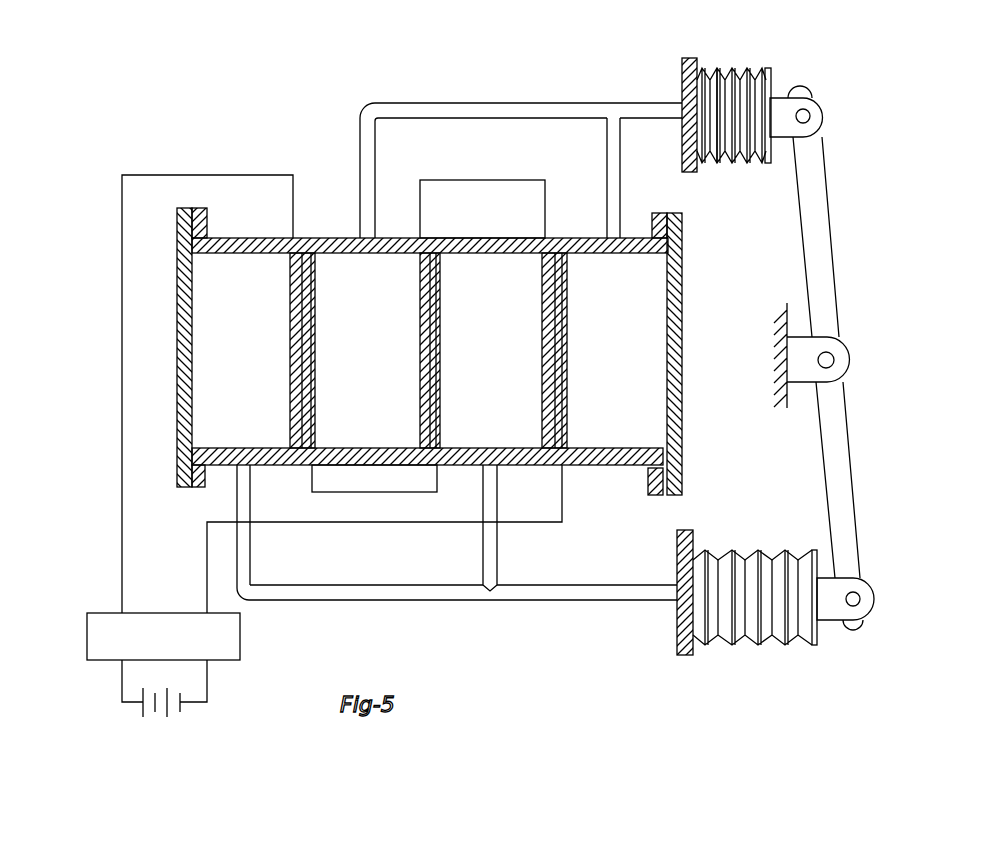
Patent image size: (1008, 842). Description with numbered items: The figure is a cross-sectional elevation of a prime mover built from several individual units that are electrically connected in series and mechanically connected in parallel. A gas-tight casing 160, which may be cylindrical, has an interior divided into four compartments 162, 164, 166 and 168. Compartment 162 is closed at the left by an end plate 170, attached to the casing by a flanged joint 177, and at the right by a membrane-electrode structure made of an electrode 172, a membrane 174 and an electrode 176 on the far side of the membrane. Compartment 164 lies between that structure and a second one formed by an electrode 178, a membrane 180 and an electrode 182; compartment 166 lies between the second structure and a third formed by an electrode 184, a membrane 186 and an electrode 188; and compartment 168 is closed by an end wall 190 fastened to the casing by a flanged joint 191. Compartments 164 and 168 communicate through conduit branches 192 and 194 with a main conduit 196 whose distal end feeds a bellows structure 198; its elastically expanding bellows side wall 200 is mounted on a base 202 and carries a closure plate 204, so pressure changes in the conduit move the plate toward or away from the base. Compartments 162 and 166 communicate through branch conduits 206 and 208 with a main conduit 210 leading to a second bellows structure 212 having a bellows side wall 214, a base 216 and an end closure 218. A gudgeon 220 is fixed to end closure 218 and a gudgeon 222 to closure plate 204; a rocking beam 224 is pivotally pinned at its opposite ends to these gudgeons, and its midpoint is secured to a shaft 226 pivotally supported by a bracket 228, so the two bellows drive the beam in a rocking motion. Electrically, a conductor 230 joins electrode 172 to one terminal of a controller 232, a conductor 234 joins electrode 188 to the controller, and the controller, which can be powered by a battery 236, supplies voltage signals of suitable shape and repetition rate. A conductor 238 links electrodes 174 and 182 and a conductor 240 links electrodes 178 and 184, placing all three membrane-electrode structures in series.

The gas-tight casing 160 is at (327, 238).
The compartment 162 is at (255, 377).
The compartment 164 is at (385, 381).
The compartment 166 is at (510, 382).
The compartment 168 is at (630, 376).
The end plate 170 is at (178, 268).
The electrode 172 is at (290, 271).
The membrane 174 is at (310, 272).
The electrode 176 is at (315, 297).
The flanged joint 177 is at (207, 212).
The electrode 178 is at (420, 317).
The membrane 180 is at (432, 270).
The electrode 182 is at (440, 297).
The electrode 184 is at (543, 320).
The membrane 186 is at (565, 273).
The electrode 188 is at (567, 297).
The end wall 190 is at (682, 271).
The flanged joint 191 is at (652, 216).
The conduit branch 192 is at (377, 146).
The conduit branch 194 is at (605, 150).
The main conduit 196 is at (450, 103).
The bellows structure 198 is at (720, 168).
The bellows side wall 200 is at (745, 166).
The base 202 is at (680, 98).
The closure plate 204 is at (772, 74).
The branch conduit 206 is at (252, 553).
The branch conduit 208 is at (483, 553).
The main conduit 210 is at (443, 602).
The bellows structure 212 is at (738, 643).
The bellows side wall 214 is at (740, 557).
The base 216 is at (672, 637).
The end closure 218 is at (820, 638).
The gudgeon 220 is at (892, 578).
The gudgeon 222 is at (820, 118).
The rocking beam 224 is at (830, 450).
The shaft 226 is at (832, 365).
The bracket 228 is at (840, 352).
The conductor 230 is at (122, 385).
The controller 232 is at (97, 612).
The conductor 234 is at (207, 548).
The battery 236 is at (175, 715).
The conductor 238 is at (397, 497).
The conductor 240 is at (447, 180).